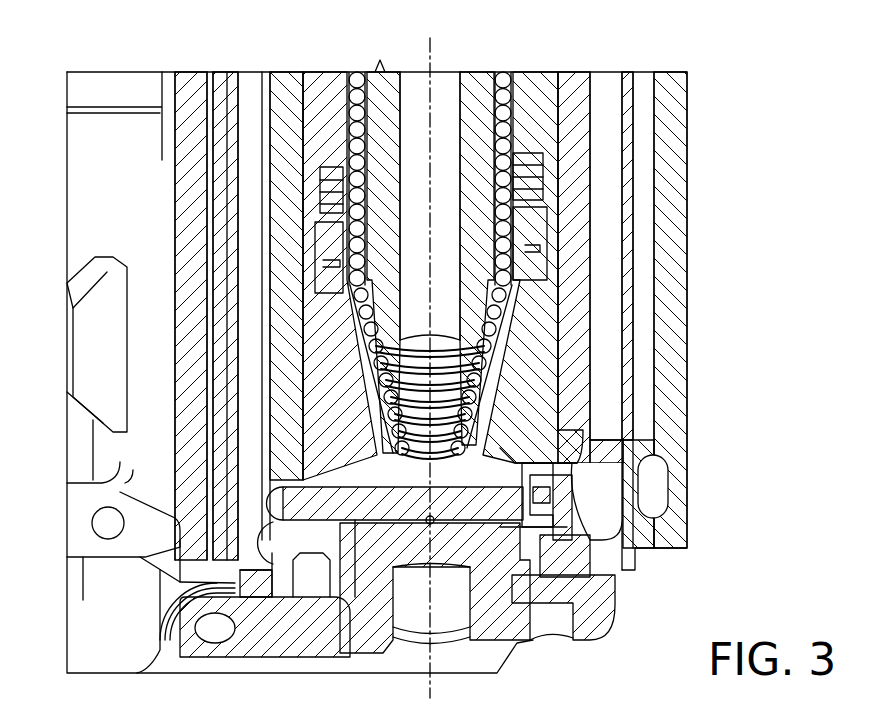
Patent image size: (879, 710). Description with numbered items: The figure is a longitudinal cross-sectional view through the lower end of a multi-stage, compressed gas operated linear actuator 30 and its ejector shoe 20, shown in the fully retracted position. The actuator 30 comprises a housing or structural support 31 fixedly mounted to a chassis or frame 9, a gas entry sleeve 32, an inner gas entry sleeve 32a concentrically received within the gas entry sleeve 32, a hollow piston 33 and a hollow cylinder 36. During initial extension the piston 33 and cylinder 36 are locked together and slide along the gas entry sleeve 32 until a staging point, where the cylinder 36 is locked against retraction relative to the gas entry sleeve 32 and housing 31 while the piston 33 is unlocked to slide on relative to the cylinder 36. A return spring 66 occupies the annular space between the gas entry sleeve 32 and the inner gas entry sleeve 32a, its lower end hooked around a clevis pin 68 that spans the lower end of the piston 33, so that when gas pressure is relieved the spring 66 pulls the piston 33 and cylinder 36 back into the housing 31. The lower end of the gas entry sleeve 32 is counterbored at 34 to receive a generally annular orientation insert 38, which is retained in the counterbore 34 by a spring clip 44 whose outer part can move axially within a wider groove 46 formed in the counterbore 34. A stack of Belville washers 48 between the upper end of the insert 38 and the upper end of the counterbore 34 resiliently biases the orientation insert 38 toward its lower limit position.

The multi-stage compressed gas operated linear actuator 30 is at (716, 46).
The chassis or frame 9 is at (148, 123).
The housing or structural support 31 is at (197, 88).
The hollow piston 33 is at (290, 85).
The return spring 66 is at (347, 73).
The inner gas entry sleeve 32a is at (422, 87).
The gas entry sleeve 32 is at (535, 85).
The orientation insert 38 is at (327, 243).
The stack of Belville washers 48 is at (323, 305).
The counterbore 34 is at (327, 330).
The wider groove 46 is at (543, 217).
The spring clip 44 is at (527, 248).
The hollow cylinder 36 is at (630, 323).
The clevis pin 68 is at (543, 512).
The ejector shoe 20 is at (603, 598).